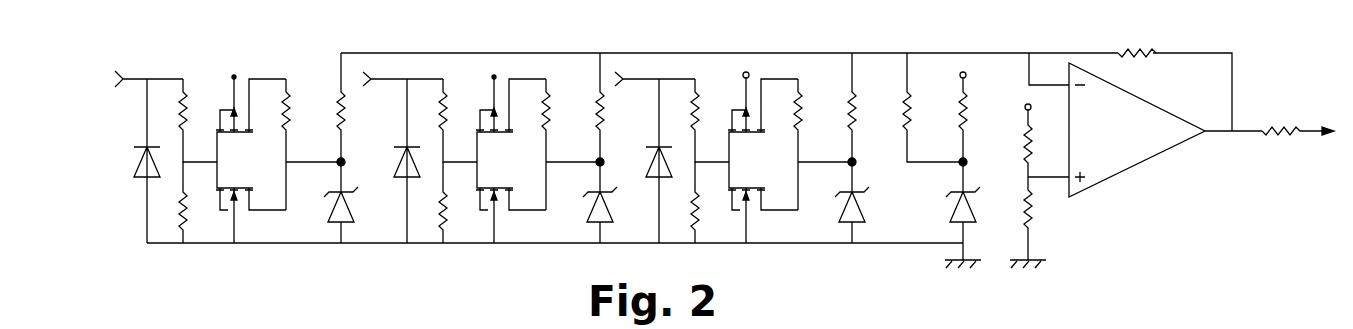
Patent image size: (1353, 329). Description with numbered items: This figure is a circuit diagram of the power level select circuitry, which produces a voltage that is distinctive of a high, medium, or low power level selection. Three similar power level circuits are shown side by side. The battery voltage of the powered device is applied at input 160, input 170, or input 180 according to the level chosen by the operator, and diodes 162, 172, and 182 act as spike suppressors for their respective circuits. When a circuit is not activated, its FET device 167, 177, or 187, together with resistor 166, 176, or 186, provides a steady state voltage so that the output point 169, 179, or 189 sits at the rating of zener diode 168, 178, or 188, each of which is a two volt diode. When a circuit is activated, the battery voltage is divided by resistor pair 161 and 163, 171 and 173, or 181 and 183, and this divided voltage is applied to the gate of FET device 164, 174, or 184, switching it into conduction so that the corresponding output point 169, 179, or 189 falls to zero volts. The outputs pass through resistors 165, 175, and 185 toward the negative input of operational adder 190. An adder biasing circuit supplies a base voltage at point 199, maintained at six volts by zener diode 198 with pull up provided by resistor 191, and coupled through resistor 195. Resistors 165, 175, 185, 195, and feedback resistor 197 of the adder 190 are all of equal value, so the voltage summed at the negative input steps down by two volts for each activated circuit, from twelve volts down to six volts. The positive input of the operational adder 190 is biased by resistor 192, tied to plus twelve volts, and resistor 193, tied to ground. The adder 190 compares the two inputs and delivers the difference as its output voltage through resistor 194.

The battery voltage input 160 is at (122, 74).
The resistor 161 is at (186, 92).
The diode 162 is at (143, 163).
The resistor 163 is at (186, 222).
The FET device 164 is at (250, 218).
The resistor 165 is at (338, 112).
The resistor 166 is at (287, 92).
The FET device 167 is at (245, 133).
The zener diode 168 is at (328, 196).
The output point 169 is at (346, 162).
The battery voltage input 170 is at (371, 73).
The resistor 171 is at (448, 102).
The diode 172 is at (403, 165).
The resistor 173 is at (444, 222).
The FET device 174 is at (511, 218).
The resistor 175 is at (597, 108).
The resistor 176 is at (548, 108).
The FET device 177 is at (508, 133).
The zener diode 178 is at (586, 196).
The output point 179 is at (605, 162).
The battery voltage input 180 is at (624, 73).
The resistor 181 is at (700, 102).
The diode 182 is at (655, 165).
The resistor 183 is at (698, 222).
The FET device 184 is at (762, 218).
The resistor 185 is at (848, 105).
The resistor 186 is at (800, 108).
The FET device 187 is at (758, 133).
The zener diode 188 is at (866, 205).
The output point 189 is at (857, 162).
The operational adder 190 is at (1136, 140).
The pull up resistor 191 is at (958, 105).
The resistor 192 is at (1022, 130).
The resistor 193 is at (1032, 215).
The output resistor 194 is at (1280, 140).
The resistor 195 is at (903, 105).
The feedback resistor 197 is at (1130, 50).
The zener diode 198 is at (976, 205).
The bias point 199 is at (990, 155).